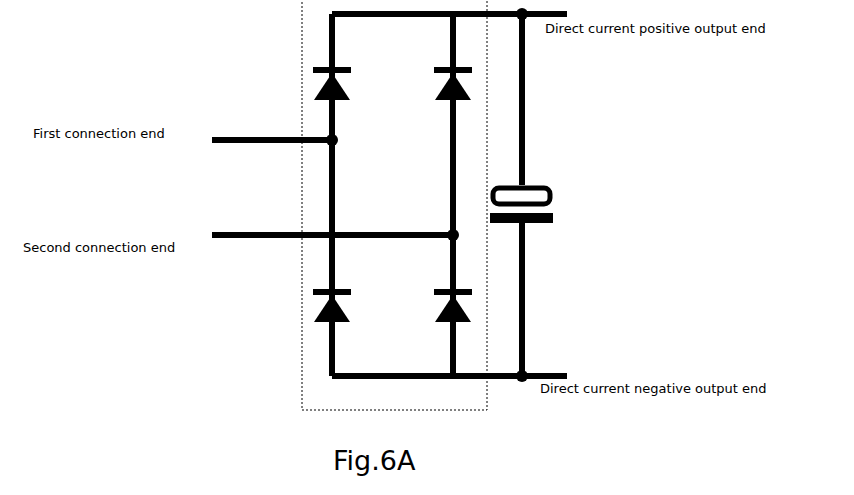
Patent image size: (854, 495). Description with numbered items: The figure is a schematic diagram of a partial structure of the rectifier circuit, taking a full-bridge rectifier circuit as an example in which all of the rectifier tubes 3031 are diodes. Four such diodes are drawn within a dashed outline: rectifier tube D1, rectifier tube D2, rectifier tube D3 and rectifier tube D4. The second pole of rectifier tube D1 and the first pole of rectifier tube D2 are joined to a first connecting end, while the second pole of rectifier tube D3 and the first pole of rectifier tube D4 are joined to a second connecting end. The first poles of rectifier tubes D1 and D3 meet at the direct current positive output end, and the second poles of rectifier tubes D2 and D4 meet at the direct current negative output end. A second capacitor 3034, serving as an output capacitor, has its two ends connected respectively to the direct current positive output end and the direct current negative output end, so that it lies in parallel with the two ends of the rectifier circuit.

The rectifier tubes 3031 is at (372, 205).
The second capacitor 3034 is at (553, 207).
The rectifier tube D1 is at (311, 85).
The rectifier tube D2 is at (313, 309).
The rectifier tube D3 is at (430, 85).
The rectifier tube D4 is at (430, 309).